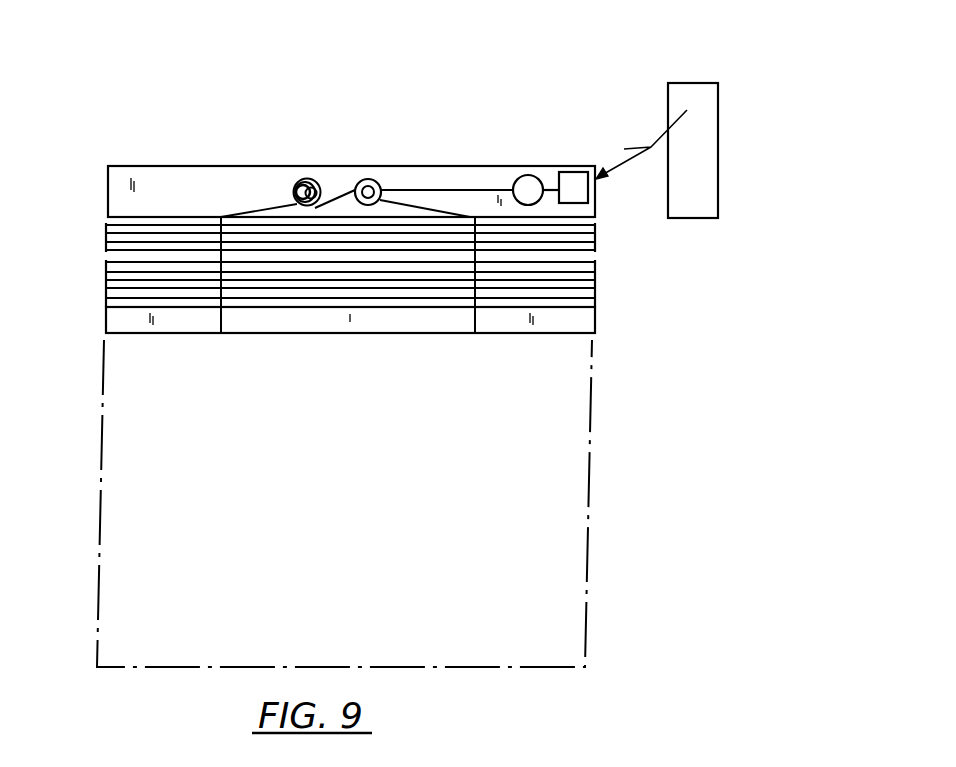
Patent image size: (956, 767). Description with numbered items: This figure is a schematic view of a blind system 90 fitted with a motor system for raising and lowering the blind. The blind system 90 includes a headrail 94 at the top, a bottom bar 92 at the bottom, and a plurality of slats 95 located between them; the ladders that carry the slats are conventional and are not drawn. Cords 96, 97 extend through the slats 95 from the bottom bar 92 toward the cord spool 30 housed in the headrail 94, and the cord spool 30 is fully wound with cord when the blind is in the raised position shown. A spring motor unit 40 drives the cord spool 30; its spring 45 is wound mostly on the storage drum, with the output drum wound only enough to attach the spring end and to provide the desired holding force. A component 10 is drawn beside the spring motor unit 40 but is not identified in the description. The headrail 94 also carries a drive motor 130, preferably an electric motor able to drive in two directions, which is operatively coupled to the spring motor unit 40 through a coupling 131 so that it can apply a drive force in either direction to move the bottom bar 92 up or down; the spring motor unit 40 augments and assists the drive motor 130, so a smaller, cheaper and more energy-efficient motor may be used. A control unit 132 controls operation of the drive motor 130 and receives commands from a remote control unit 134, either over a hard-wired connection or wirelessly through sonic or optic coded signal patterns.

The roll of shutter material 10 is at (296, 180).
The cord spool 30 is at (340, 193).
The spring motor unit 40 is at (356, 165).
The spring 45 is at (337, 197).
The blind system 90 is at (300, 340).
The bottom bar 92 is at (352, 322).
The headrail 94 is at (133, 184).
The slats 95 is at (595, 243).
The cord 96 is at (487, 278).
The cord 97 is at (218, 283).
The drive motor 130 is at (522, 176).
The coupling 131 is at (446, 189).
The control unit 132 is at (575, 172).
The remote control unit 134 is at (700, 83).